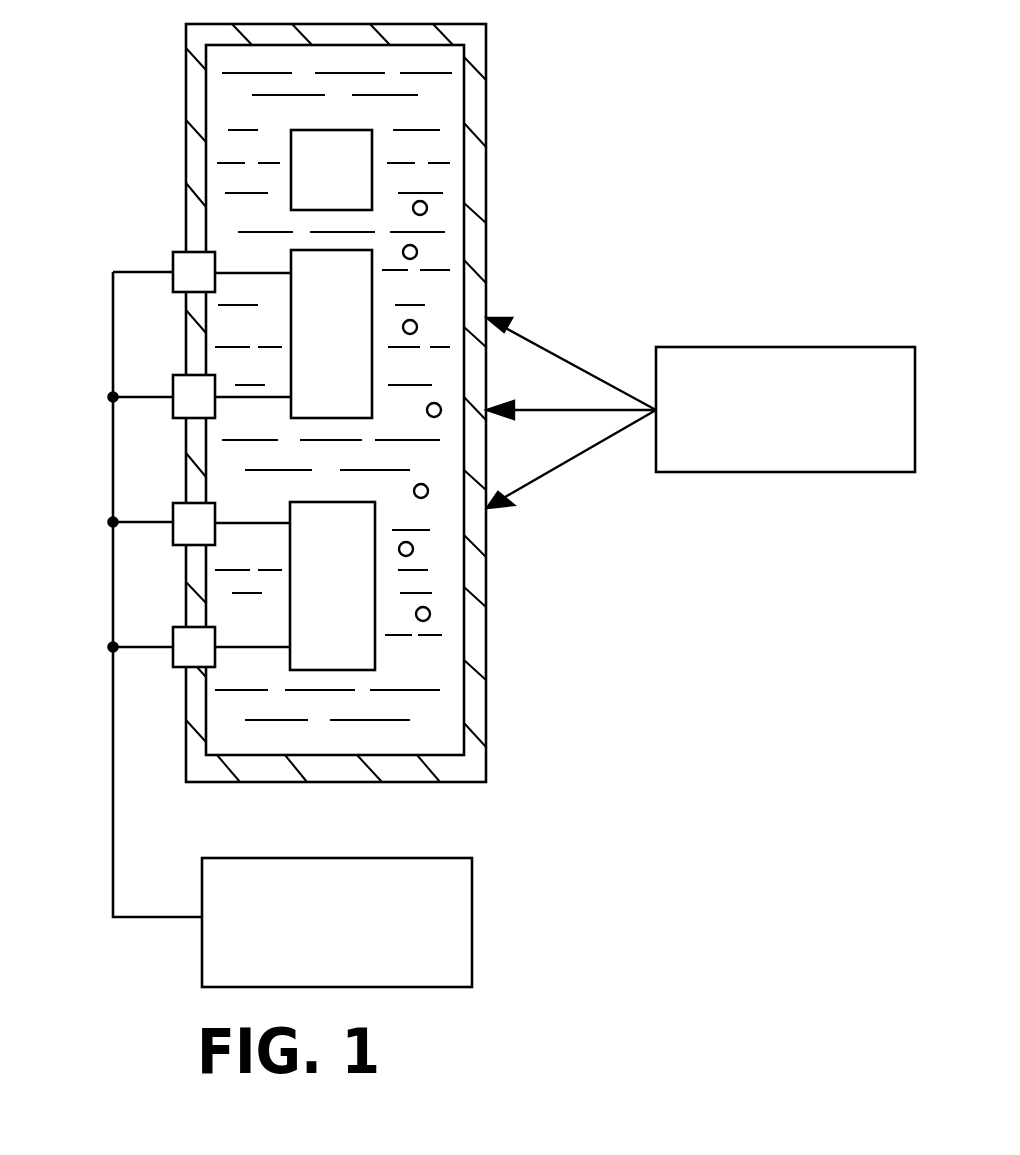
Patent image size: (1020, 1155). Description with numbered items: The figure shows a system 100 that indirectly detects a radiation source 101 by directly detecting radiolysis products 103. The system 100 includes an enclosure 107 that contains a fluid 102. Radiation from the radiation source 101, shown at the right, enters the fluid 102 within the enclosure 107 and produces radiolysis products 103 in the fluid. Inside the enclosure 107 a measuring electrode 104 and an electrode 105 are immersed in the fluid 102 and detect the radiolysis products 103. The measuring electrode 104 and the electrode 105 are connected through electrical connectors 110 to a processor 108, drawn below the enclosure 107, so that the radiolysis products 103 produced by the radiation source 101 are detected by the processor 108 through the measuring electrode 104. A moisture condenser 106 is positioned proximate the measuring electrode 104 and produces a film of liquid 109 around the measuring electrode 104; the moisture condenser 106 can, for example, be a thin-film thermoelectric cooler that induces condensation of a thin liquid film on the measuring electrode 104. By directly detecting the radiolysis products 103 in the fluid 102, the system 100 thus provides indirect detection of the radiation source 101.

The system 100 is at (473, 505).
The radiation source 101 is at (795, 347).
The fluid 102 is at (432, 120).
The radiolysis products 103 is at (418, 324).
The measuring electrode 104 is at (352, 352).
The electrode 105 is at (352, 604).
The moisture condenser 106 is at (352, 189).
The enclosure 107 is at (486, 731).
The processor 108 is at (472, 890).
The film of liquid 109 is at (291, 307).
The electrical connectors 110 is at (173, 283).